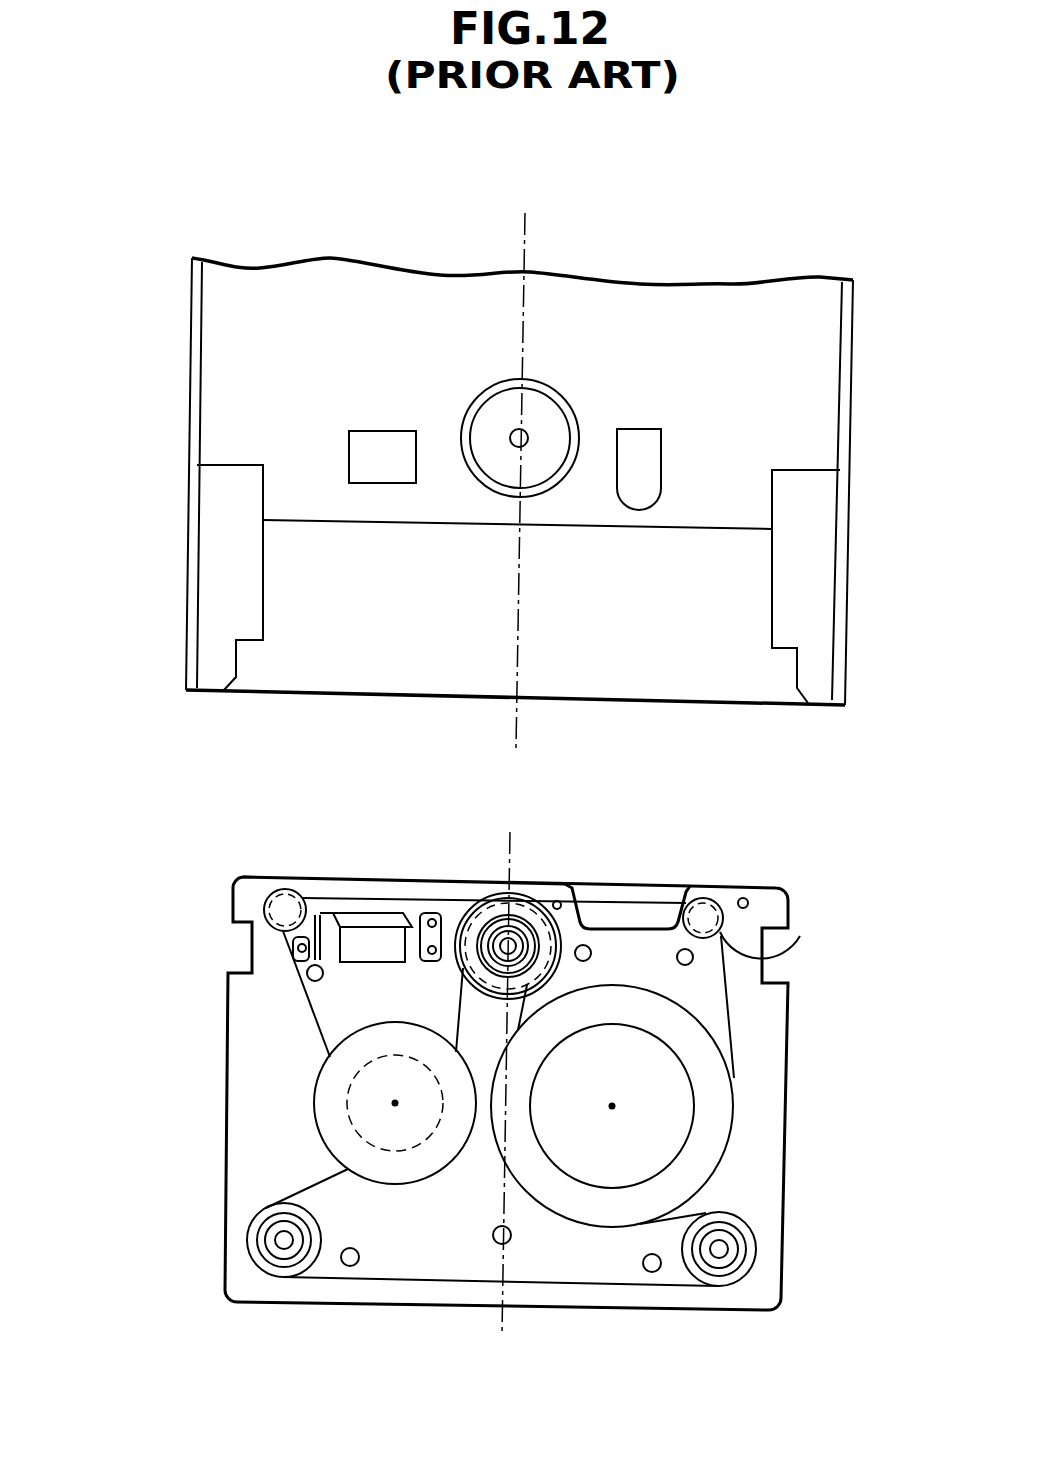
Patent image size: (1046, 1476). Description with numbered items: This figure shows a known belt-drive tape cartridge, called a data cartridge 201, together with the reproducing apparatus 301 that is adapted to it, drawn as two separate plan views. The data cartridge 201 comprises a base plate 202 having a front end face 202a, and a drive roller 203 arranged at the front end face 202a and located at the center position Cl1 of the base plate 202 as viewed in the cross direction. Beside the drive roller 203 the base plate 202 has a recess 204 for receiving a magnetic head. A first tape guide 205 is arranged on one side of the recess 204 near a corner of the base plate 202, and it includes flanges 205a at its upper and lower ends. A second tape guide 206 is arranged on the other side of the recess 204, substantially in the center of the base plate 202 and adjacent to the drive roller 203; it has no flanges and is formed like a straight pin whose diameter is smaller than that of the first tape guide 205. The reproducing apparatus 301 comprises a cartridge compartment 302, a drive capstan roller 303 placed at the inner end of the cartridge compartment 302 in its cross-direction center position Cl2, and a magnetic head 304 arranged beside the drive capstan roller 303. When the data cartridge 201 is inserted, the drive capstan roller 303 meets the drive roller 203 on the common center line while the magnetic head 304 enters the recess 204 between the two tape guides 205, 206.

The data cartridge 201 is at (490, 1056).
The base plate 202 is at (248, 1003).
The front end face 202a is at (250, 877).
The drive roller 203 is at (518, 905).
The recess 204 is at (637, 930).
The first tape guide 205 is at (712, 896).
The flanges 205a is at (803, 934).
The second tape guide 206 is at (575, 888).
The reproducing apparatus 301 is at (461, 470).
The cartridge compartment 302 is at (349, 675).
The drive capstan roller 303 is at (497, 388).
The magnetic head 304 is at (647, 435).
The center position of the base plate Cl1 is at (510, 848).
The center position of the cartridge compartment Cl2 is at (512, 736).